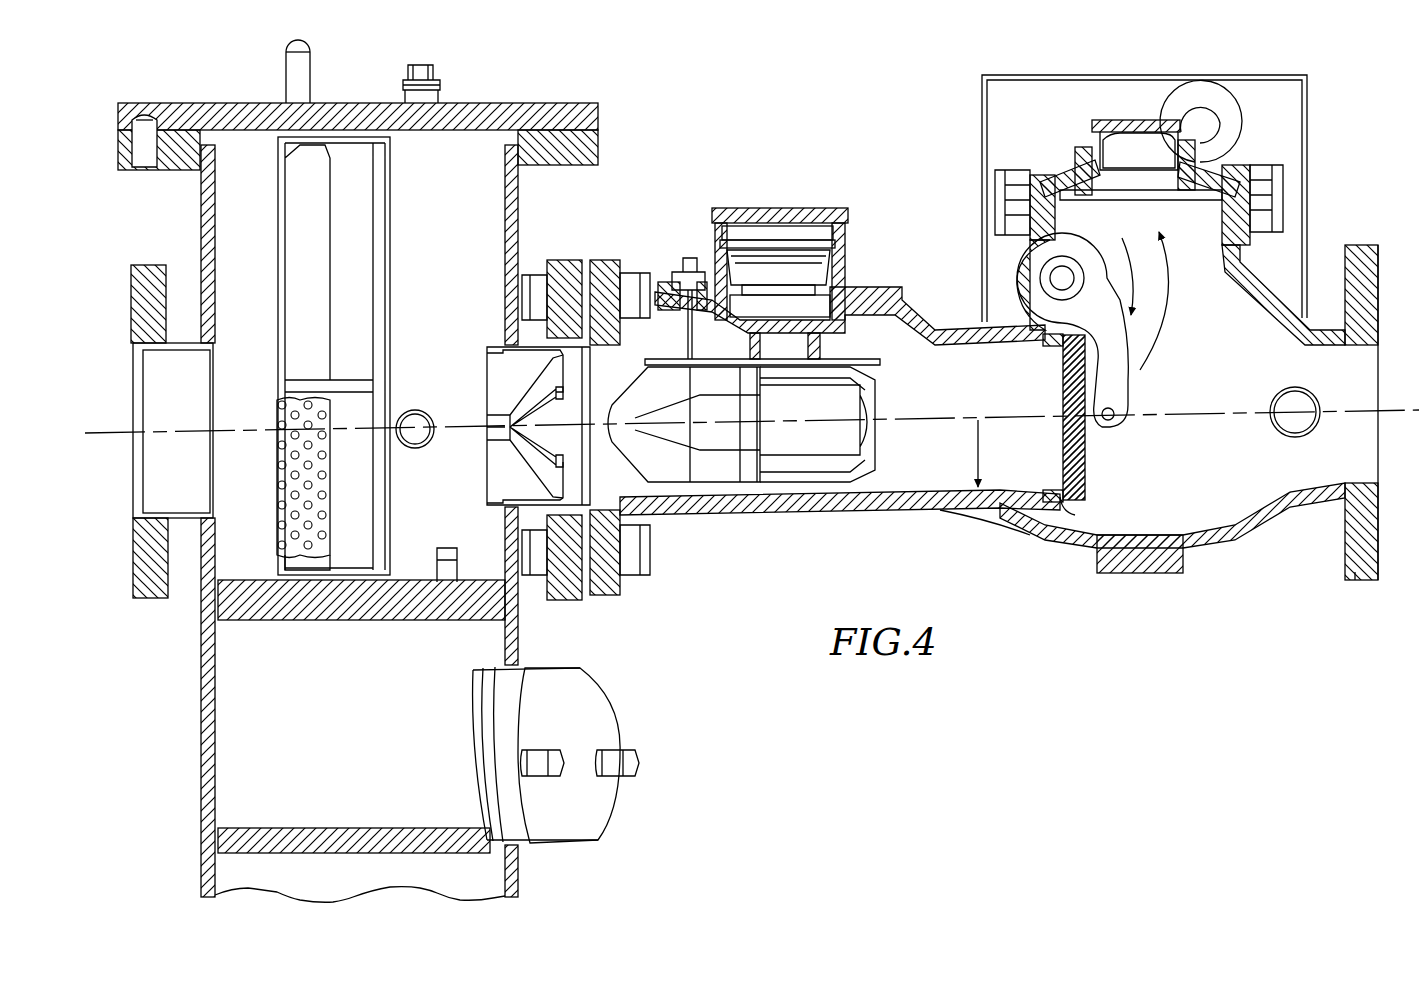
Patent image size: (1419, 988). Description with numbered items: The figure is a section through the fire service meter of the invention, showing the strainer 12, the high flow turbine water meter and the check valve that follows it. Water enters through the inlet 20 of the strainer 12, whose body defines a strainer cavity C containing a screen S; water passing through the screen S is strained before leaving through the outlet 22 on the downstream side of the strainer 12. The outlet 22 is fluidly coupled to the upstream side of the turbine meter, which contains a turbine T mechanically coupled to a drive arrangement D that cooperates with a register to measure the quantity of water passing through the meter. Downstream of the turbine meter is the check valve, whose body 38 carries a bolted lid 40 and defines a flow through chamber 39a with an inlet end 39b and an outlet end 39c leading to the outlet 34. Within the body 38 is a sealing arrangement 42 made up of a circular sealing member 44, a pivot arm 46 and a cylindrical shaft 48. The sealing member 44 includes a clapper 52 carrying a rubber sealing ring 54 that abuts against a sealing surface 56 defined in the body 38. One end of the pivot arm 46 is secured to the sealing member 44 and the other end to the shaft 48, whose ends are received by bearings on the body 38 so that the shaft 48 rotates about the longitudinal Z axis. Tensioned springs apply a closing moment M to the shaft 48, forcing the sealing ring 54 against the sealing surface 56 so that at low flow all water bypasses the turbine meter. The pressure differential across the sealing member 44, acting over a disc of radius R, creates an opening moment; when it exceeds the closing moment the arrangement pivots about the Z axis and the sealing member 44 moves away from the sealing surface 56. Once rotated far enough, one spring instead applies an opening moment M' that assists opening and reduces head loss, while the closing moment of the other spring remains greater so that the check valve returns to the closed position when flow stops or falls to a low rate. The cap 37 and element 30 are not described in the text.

The strainer 12 is at (476, 103).
The inlet 20 is at (152, 265).
The outlet 22 is at (512, 240).
The valve cap 37 is at (795, 208).
The strainer cavity C is at (240, 258).
The screen S is at (382, 246).
The drive arrangement D is at (842, 296).
The turbine T is at (874, 412).
The radius of the sealing member R is at (967, 453).
The longitudinal axis Z is at (1078, 264).
The closing moment M is at (1119, 276).
The opening moment M' is at (1167, 301).
The lid 40 is at (1052, 176).
The shaft 48 is at (1010, 266).
The body 38 is at (1268, 232).
The outlet 34 is at (1358, 248).
The valve housing 30 is at (1310, 316).
The sealing arrangement 42 is at (1112, 330).
The pivot arm 46 is at (1118, 392).
The sealing ring 54 is at (1058, 346).
The sealing member 44 is at (1090, 458).
The clapper 52 is at (1076, 498).
The sealing surface 56 is at (1040, 528).
The inlet end 39b is at (1032, 490).
The flow through chamber 39a is at (1212, 488).
The outlet end 39c is at (1308, 500).